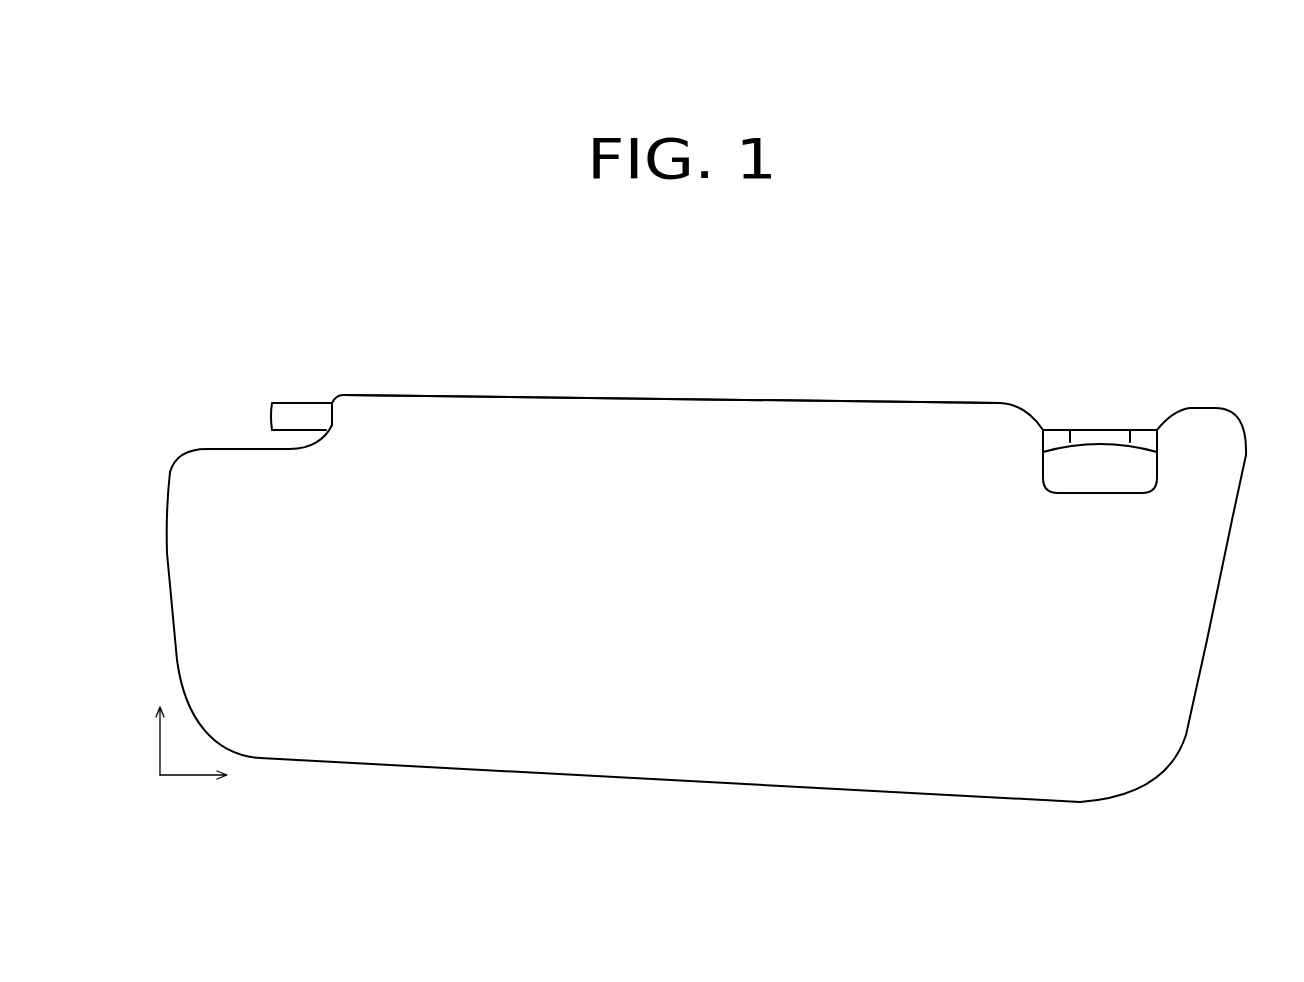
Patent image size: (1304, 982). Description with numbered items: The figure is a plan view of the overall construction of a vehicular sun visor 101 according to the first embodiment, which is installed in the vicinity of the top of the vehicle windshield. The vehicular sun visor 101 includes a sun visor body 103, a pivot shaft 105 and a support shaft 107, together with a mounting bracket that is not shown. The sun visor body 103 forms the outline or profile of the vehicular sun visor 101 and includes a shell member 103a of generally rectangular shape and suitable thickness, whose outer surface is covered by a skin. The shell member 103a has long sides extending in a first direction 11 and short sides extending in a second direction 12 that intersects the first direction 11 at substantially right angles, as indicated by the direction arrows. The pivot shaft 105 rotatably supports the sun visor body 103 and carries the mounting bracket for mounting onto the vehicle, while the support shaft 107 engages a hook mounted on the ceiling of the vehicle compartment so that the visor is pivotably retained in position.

The vehicular sun visor 101 is at (953, 305).
The sun visor body 103 is at (722, 387).
The shell member 103a is at (671, 340).
The pivot shaft 105 is at (309, 396).
The support shaft 107 is at (1101, 418).
The first direction 11 is at (194, 797).
The second direction 12 is at (140, 739).